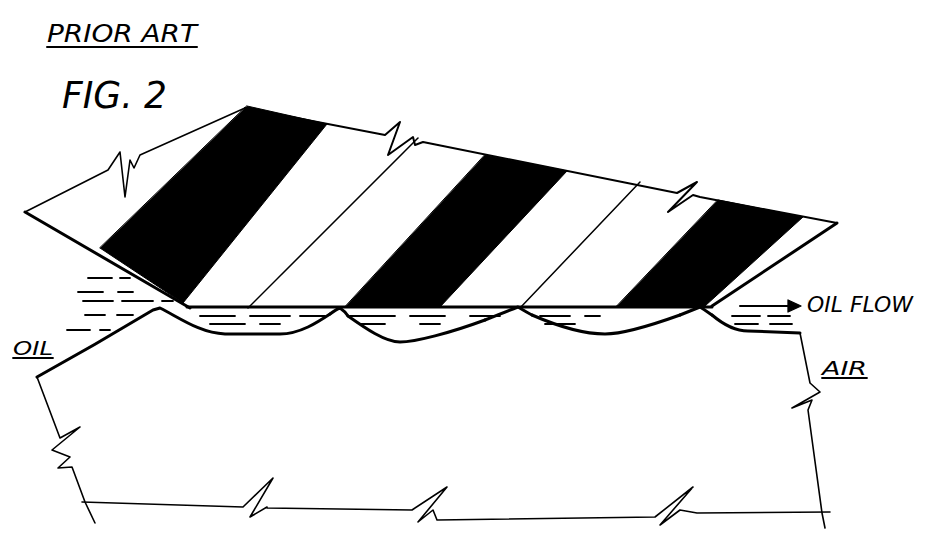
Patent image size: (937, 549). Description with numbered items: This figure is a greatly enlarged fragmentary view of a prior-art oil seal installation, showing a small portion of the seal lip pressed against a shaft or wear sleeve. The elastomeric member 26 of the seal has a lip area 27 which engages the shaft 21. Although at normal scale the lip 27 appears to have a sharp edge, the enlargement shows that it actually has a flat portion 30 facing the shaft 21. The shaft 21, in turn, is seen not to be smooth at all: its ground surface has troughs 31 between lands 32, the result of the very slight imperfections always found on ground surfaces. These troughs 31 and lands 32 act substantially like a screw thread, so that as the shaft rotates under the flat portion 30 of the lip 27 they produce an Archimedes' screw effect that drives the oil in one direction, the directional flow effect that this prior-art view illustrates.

The elastomeric member 26 is at (438, 158).
The lip area 27 is at (718, 305).
The flat portion 30 is at (607, 291).
The troughs 31 is at (238, 333).
The lands 32 is at (334, 314).
The shaft 21 is at (757, 406).